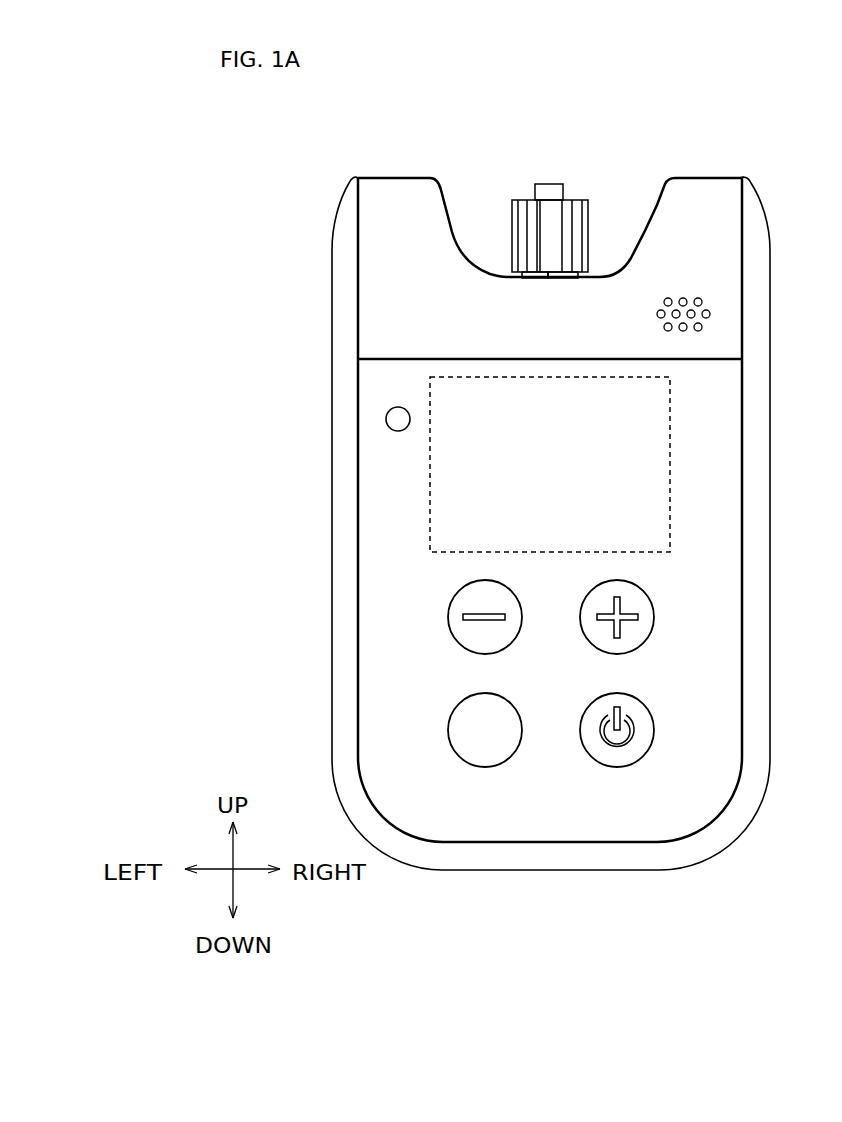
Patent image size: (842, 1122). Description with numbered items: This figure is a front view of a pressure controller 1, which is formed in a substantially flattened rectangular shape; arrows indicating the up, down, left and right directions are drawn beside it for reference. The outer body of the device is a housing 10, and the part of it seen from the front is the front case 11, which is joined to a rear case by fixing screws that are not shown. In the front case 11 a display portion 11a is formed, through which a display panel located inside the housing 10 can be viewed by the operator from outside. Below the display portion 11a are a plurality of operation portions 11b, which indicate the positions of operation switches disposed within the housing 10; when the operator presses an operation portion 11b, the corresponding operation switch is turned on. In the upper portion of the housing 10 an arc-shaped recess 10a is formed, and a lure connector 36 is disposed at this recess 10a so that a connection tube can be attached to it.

The pressure controller 1 is at (768, 164).
The housing 10 is at (768, 212).
The arc-shaped recess 10a is at (657, 205).
The front case 11 is at (713, 184).
The display portion 11a is at (680, 525).
The operation portions 11b is at (587, 648).
The lure connector 36 is at (513, 213).